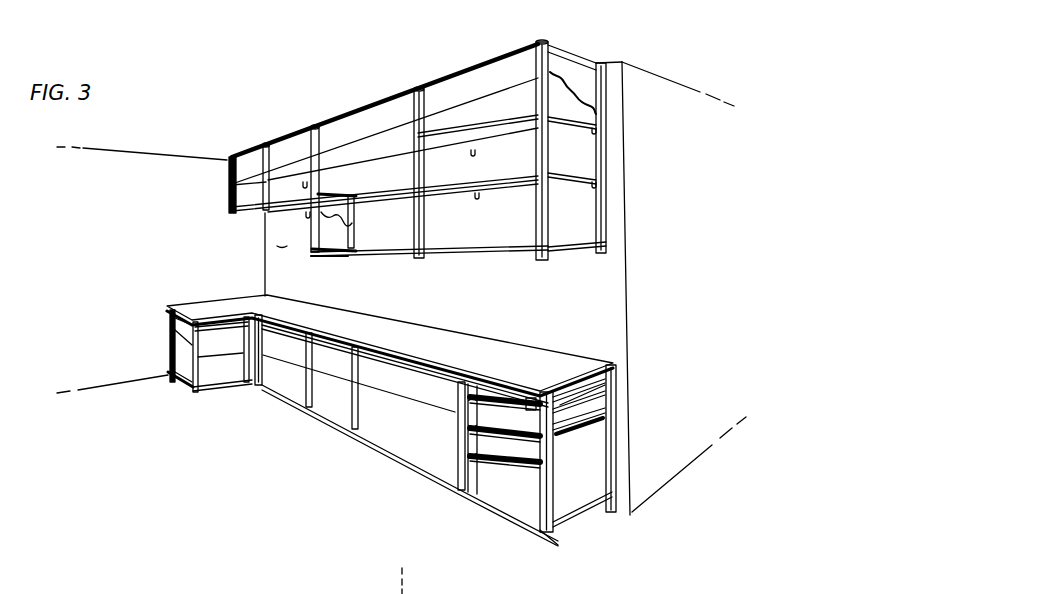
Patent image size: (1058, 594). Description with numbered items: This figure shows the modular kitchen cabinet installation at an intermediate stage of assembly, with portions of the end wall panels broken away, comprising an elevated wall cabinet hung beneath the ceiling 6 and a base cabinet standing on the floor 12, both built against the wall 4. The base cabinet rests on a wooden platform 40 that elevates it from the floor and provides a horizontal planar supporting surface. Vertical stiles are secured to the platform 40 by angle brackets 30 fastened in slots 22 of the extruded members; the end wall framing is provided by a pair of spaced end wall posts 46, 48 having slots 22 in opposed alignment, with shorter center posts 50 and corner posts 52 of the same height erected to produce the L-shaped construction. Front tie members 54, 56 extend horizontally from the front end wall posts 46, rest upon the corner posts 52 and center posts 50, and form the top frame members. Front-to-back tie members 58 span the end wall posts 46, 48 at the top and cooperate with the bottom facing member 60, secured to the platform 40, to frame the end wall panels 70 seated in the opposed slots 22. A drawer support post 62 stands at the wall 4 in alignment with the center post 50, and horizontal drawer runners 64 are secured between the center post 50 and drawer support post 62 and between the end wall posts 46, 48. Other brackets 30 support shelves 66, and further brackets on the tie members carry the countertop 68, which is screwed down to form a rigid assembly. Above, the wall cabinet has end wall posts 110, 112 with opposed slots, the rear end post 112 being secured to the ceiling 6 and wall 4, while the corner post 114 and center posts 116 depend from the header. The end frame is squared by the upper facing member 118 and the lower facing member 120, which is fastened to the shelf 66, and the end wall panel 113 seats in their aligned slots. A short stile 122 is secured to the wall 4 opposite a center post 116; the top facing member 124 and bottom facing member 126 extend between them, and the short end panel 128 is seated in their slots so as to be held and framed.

The wall 4 is at (359, 410).
The ceiling 6 is at (234, 133).
The floor 12 is at (318, 478).
The slots 22 is at (619, 389).
The angle brackets 30 is at (418, 387).
The wooden platform 40 is at (420, 455).
The front end wall post 46 is at (231, 386).
The back end wall post 48 is at (165, 311).
The center post 50 is at (351, 410).
The corner post 52 is at (261, 386).
The front tie member 54 is at (233, 330).
The front tie member 56 is at (411, 378).
The front-to-back tie member 58 is at (182, 347).
The bottom facing member 60 is at (183, 383).
The drawer support post 62 is at (527, 409).
The horizontal drawer runners 64 is at (522, 445).
The shelves 66 is at (507, 253).
The countertop 68 is at (339, 311).
The end wall panels 70 is at (180, 353).
The front end post 110 is at (535, 74).
The rear end post 112 is at (603, 133).
The end wall panel 113 is at (593, 95).
The corner post 114 is at (228, 171).
The center posts 116 is at (418, 87).
The upper facing member 118 is at (574, 56).
The lower facing member 120 is at (590, 250).
The short stile 122 is at (352, 220).
The top facing member 124 is at (356, 195).
The bottom facing member 126 is at (347, 257).
The short end panel 128 is at (340, 242).